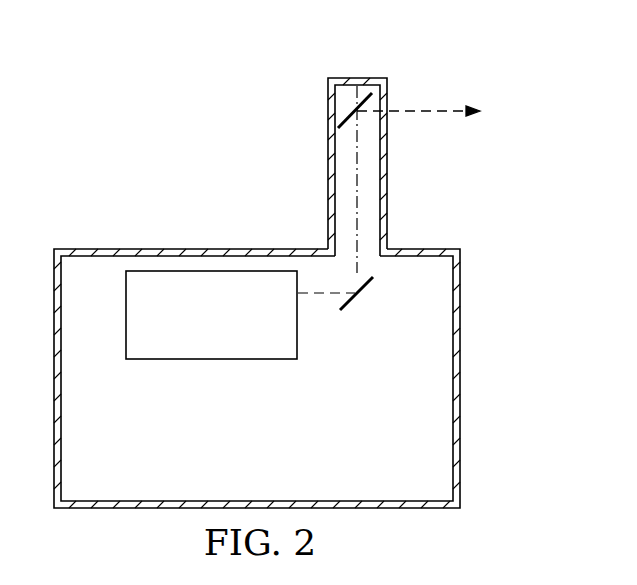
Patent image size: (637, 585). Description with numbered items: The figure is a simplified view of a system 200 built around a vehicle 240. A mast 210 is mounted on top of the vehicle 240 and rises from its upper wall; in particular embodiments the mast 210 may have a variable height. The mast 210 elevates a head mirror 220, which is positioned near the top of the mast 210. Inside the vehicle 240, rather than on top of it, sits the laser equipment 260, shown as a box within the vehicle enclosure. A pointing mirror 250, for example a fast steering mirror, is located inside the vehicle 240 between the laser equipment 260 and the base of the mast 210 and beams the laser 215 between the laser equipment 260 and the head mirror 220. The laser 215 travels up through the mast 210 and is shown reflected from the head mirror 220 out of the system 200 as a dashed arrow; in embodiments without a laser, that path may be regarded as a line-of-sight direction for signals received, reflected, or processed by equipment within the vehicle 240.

The system 200 is at (213, 117).
The mast 210 is at (387, 167).
The laser 215 is at (437, 112).
The head mirror 220 is at (350, 98).
The vehicle 240 is at (460, 388).
The pointing mirror 250 is at (352, 304).
The laser equipment 260 is at (232, 327).